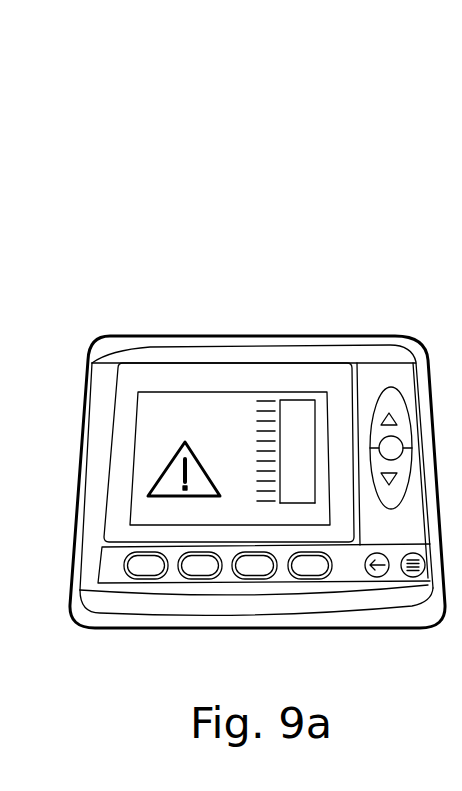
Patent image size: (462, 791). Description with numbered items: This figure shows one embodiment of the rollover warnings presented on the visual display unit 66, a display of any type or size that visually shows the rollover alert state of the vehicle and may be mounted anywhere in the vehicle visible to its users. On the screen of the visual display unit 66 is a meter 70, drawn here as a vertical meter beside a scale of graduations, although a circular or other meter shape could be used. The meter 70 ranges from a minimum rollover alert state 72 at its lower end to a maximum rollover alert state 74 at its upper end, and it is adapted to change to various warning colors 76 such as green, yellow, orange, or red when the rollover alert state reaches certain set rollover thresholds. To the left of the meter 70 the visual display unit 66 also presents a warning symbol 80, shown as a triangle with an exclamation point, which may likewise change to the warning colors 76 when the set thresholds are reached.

The visual display unit 66 is at (191, 118).
The meter 70 is at (287, 400).
The minimum rollover alert state 72 is at (303, 503).
The maximum rollover alert state 74 is at (312, 400).
The warning colors 76 is at (219, 383).
The warning symbol 80 is at (162, 472).